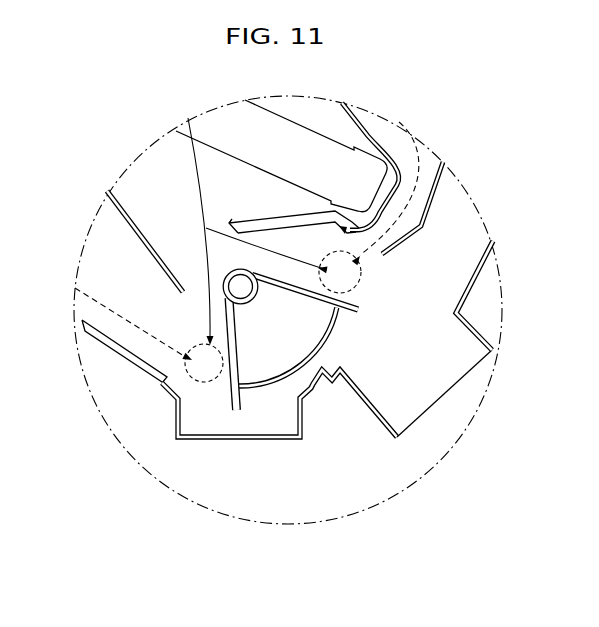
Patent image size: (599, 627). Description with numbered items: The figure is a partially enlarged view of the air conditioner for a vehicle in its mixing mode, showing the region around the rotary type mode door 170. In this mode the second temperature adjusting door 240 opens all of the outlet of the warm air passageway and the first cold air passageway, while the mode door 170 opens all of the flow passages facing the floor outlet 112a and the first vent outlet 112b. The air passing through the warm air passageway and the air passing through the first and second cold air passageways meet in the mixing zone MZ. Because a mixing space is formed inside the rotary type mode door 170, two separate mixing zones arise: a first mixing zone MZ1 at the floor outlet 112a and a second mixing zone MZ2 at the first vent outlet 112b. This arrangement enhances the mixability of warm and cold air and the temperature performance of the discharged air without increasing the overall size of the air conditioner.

The second temperature adjusting door 240 is at (148, 246).
The floor outlet 112a is at (253, 430).
The first vent outlet 112b is at (414, 395).
The mode door 170 is at (274, 392).
The mixing zone MZ is at (304, 333).
The first mixing zone MZ1 is at (205, 384).
The second mixing zone MZ2 is at (360, 265).